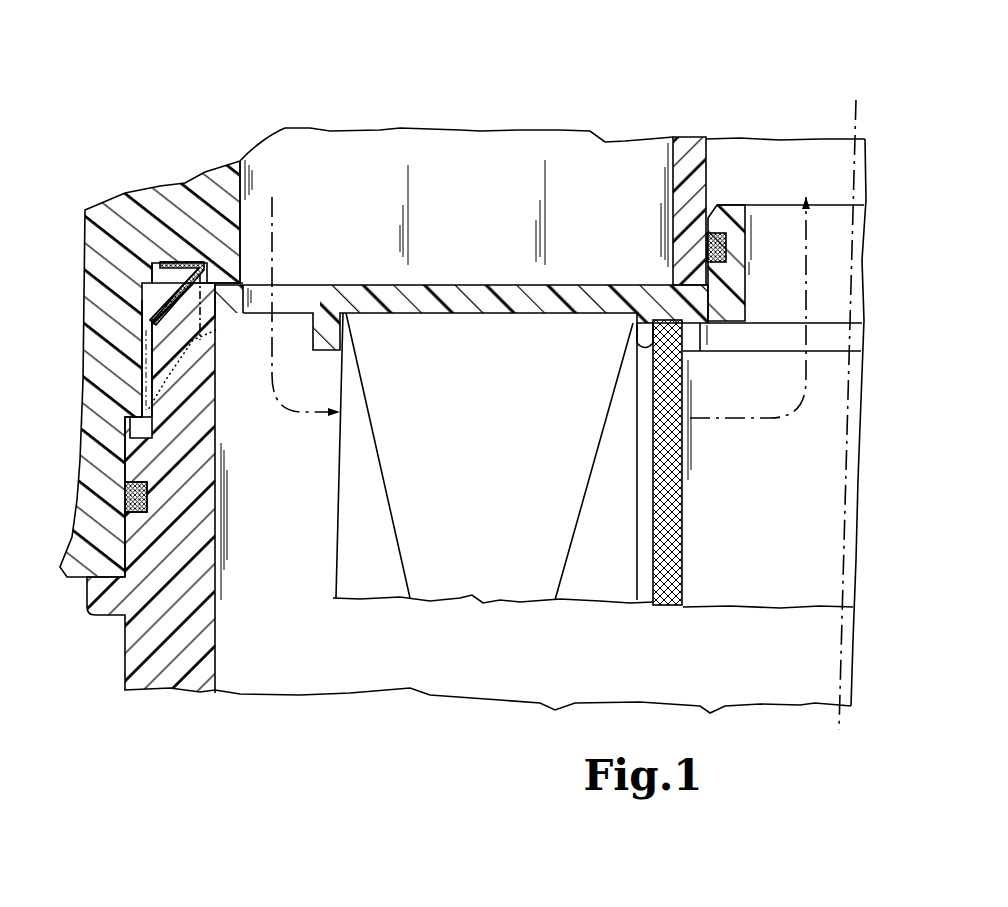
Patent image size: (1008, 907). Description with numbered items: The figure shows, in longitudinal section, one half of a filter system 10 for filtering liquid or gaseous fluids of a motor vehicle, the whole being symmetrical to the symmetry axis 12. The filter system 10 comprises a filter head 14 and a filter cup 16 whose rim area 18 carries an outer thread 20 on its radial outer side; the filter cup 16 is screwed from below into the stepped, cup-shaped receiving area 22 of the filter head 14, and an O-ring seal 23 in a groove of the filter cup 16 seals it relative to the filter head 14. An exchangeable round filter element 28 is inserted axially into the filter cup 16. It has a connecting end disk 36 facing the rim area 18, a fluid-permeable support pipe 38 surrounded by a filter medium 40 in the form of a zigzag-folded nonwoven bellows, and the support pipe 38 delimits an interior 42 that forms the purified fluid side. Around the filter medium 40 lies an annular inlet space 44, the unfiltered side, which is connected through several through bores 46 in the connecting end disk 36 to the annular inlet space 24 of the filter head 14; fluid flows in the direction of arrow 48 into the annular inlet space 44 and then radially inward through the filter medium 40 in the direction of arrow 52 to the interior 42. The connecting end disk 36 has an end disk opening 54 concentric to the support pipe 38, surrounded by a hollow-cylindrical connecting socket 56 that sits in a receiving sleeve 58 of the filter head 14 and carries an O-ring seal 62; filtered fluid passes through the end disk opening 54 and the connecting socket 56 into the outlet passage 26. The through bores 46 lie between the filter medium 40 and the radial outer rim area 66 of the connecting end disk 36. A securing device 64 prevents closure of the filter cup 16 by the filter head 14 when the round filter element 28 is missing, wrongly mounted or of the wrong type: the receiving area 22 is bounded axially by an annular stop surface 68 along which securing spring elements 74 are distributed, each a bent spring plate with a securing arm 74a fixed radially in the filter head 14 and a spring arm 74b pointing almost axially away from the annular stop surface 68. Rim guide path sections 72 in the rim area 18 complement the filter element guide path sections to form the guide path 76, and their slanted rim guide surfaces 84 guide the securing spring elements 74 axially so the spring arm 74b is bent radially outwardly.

The filter system 10 is at (292, 120).
The symmetry axis 12 is at (855, 102).
The filter head 14 is at (183, 184).
The filter cup 16 is at (150, 650).
The rim area 18 is at (199, 400).
The outer thread 20 is at (142, 413).
The receiving area 22 is at (140, 378).
The O-ring seal 23 is at (125, 500).
The annular inlet space 24 is at (472, 257).
The outlet passage 26 is at (785, 184).
The round filter element 28 is at (727, 625).
The connecting end disk 36 is at (600, 300).
The support pipe 38 is at (655, 605).
The filter medium 40 is at (517, 575).
The interior 42 is at (775, 534).
The annular inlet space 44 is at (264, 508).
The through bores 46 is at (305, 294).
The arrow 48 is at (280, 228).
The arrow 52 is at (725, 420).
The end disk opening 54 is at (762, 304).
The connecting socket 56 is at (730, 210).
The receiving sleeve 58 is at (690, 137).
The O-ring seal 62 is at (727, 250).
The securing device 64 is at (152, 283).
The radial outer rim area 66 is at (220, 318).
The annular stop surface 68 is at (216, 285).
The rim guide path sections 72 is at (225, 275).
The securing spring elements 74 is at (184, 256).
The securing arm 74a is at (178, 254).
The spring arm 74b is at (148, 305).
The guide path 76 is at (156, 322).
The rim guide surfaces 84 is at (174, 322).